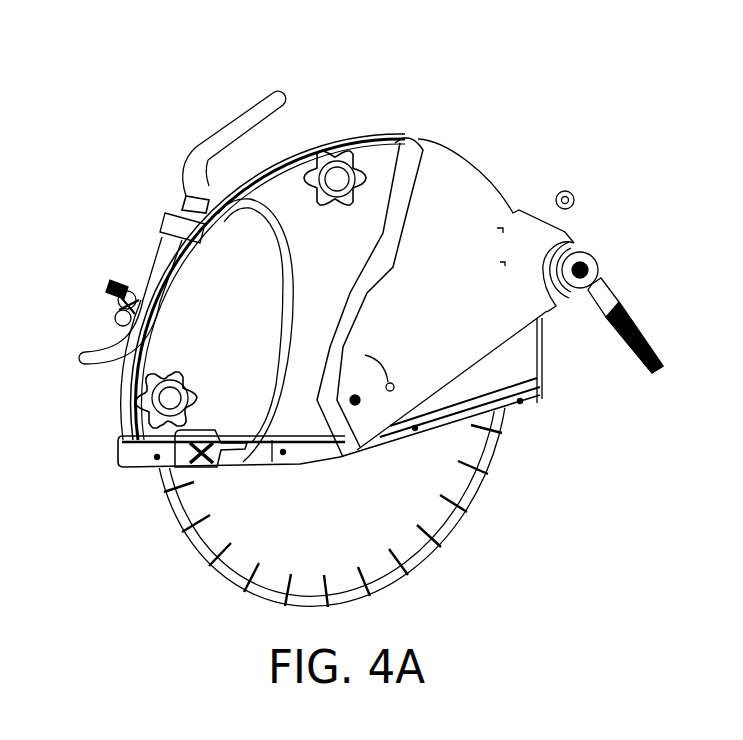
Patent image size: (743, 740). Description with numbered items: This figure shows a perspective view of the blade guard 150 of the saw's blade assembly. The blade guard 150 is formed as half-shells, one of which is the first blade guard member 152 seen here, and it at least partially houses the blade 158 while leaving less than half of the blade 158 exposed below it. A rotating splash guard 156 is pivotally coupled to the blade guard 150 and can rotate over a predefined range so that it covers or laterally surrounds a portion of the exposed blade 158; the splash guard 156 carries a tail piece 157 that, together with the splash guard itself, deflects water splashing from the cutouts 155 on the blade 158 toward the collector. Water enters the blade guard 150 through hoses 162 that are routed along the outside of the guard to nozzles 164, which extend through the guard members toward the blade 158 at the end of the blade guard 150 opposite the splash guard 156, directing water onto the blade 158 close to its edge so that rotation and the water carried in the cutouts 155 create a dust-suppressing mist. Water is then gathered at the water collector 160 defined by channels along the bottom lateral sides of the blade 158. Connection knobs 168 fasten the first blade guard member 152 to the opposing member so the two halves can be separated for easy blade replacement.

The blade guard 150 is at (508, 72).
The first blade guard member 152 is at (382, 170).
The cutouts 155 is at (482, 488).
The rotating splash guard 156 is at (452, 193).
The tail piece 157 is at (607, 309).
The blade 158 is at (297, 568).
The water collector 160 is at (497, 409).
The hoses 162 is at (237, 200).
The nozzles 164 is at (195, 450).
The connection knobs 168 is at (333, 160).